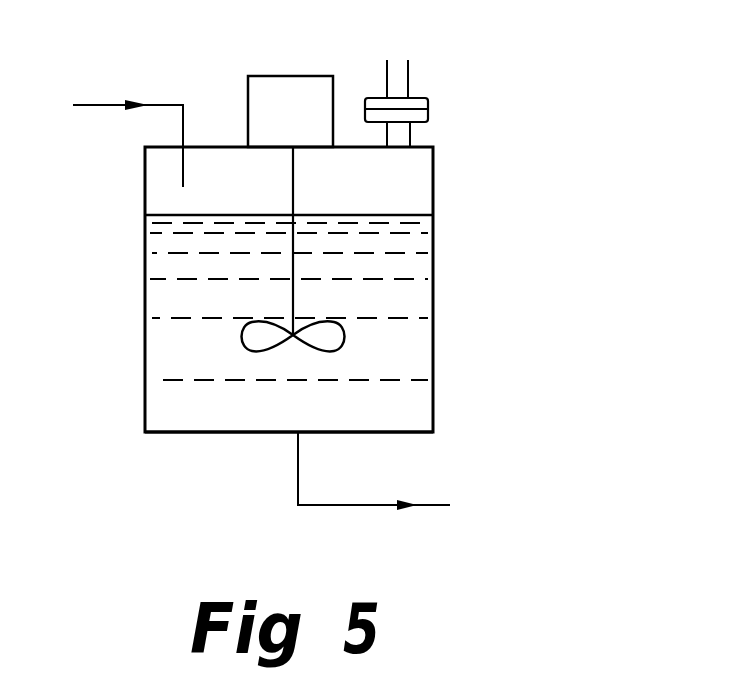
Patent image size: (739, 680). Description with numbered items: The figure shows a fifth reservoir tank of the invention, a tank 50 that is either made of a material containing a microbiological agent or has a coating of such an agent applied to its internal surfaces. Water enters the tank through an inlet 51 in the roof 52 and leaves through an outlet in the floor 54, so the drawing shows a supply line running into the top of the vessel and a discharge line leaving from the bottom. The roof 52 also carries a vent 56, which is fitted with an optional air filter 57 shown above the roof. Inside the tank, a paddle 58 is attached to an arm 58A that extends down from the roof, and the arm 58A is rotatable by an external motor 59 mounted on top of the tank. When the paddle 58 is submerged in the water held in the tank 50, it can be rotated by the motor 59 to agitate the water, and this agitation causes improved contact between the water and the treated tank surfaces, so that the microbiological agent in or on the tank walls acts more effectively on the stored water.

The tank 50 is at (462, 303).
The inlet 51 is at (185, 144).
The roof 52 is at (343, 147).
The floor 54 is at (183, 433).
The vent 56 is at (398, 137).
The air filter 57 is at (413, 103).
The paddle 58 is at (347, 333).
The arm 58A is at (295, 267).
The motor 59 is at (292, 75).